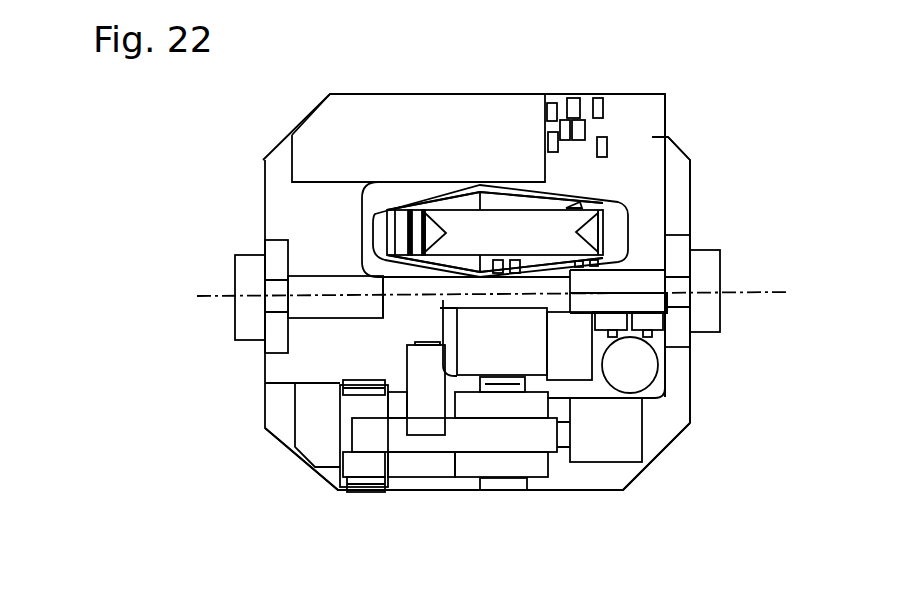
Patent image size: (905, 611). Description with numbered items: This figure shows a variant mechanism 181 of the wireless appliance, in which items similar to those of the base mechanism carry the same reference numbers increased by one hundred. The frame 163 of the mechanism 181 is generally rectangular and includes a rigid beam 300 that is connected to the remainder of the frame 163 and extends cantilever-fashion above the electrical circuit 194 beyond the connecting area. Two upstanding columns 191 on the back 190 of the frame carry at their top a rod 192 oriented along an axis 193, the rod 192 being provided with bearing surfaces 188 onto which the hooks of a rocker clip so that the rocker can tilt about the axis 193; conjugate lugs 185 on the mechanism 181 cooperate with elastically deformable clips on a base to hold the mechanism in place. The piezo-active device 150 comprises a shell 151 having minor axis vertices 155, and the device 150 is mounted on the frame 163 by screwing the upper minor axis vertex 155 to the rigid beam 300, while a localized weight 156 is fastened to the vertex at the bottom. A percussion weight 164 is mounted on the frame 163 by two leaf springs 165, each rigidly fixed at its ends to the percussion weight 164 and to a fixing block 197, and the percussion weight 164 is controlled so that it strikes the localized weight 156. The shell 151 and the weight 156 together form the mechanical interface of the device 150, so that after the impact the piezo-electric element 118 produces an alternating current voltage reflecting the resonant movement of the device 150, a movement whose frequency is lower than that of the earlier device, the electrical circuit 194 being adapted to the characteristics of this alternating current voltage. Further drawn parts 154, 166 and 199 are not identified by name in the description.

The mechanism 181 is at (192, 178).
The rigid beam 300 is at (447, 97).
The electrical circuit 194 is at (628, 100).
The piezo-active device 150 is at (630, 163).
The frame 163 is at (682, 193).
The back 190 is at (393, 193).
The minor axis vertices 155 is at (503, 184).
The coil housing walls 154 is at (383, 230).
The shell 151 is at (570, 200).
The piezo-electric element 118 is at (520, 245).
The lugs 185 is at (237, 274).
The columns 191 is at (271, 346).
The bearing surfaces 188 is at (322, 282).
The rod 192 is at (397, 318).
The axis 193 is at (743, 292).
The localized weight 156 is at (518, 353).
The fixing block 197 is at (363, 478).
The cross bar 166 is at (537, 443).
The leaf springs 165 is at (427, 480).
The percussion weight 164 is at (467, 472).
The housing bottom 199 is at (303, 438).